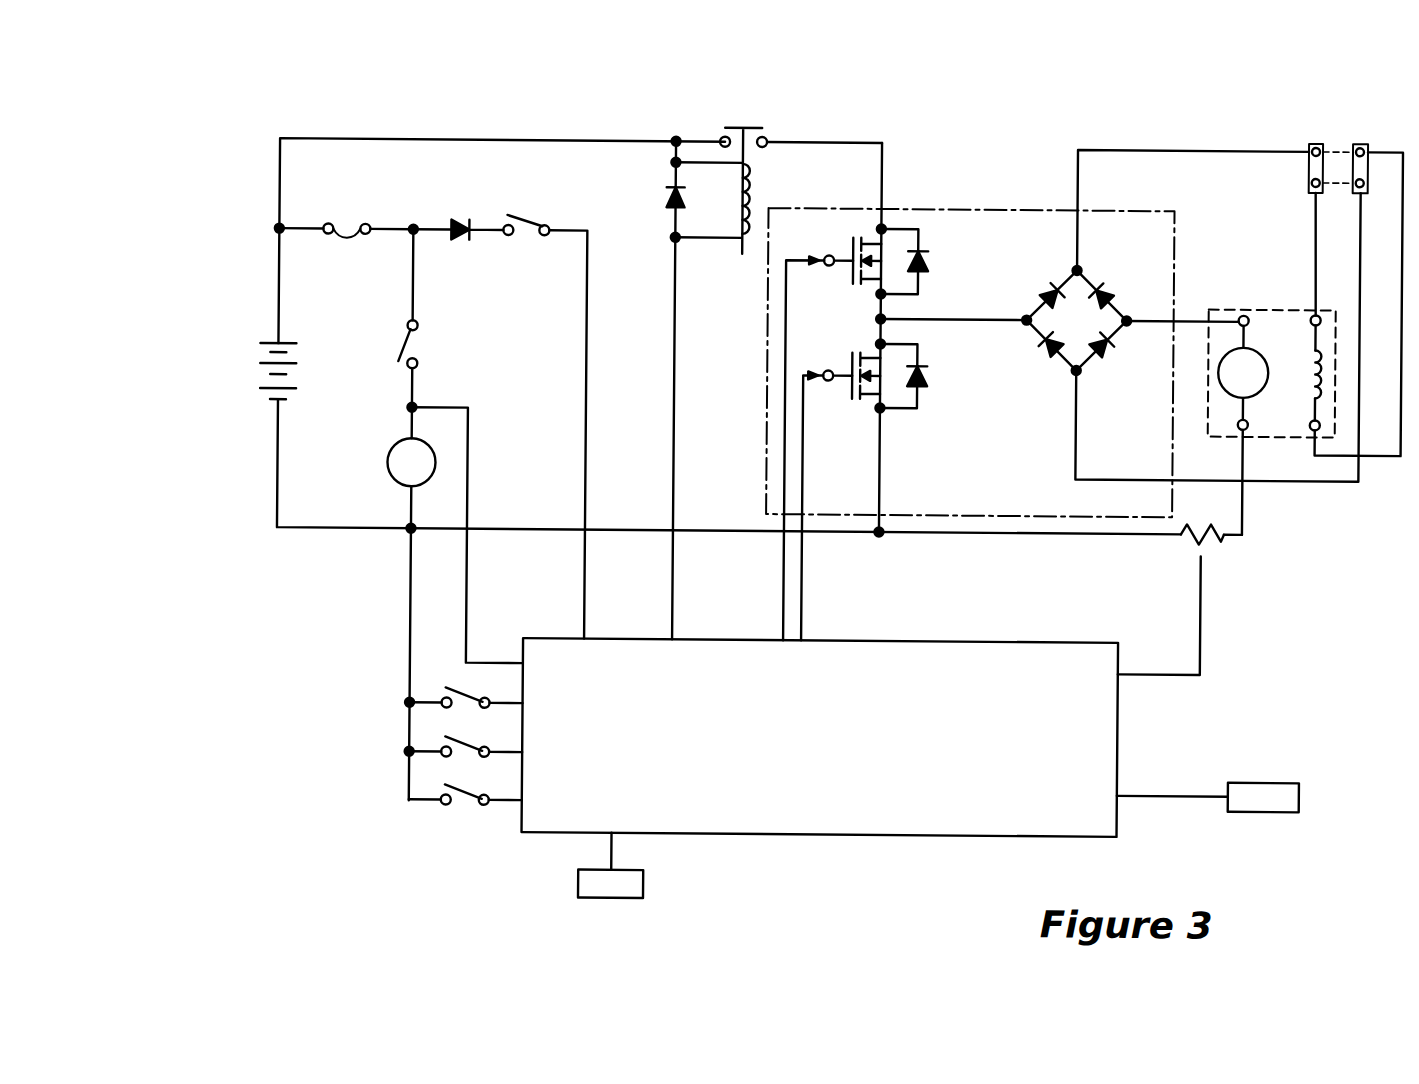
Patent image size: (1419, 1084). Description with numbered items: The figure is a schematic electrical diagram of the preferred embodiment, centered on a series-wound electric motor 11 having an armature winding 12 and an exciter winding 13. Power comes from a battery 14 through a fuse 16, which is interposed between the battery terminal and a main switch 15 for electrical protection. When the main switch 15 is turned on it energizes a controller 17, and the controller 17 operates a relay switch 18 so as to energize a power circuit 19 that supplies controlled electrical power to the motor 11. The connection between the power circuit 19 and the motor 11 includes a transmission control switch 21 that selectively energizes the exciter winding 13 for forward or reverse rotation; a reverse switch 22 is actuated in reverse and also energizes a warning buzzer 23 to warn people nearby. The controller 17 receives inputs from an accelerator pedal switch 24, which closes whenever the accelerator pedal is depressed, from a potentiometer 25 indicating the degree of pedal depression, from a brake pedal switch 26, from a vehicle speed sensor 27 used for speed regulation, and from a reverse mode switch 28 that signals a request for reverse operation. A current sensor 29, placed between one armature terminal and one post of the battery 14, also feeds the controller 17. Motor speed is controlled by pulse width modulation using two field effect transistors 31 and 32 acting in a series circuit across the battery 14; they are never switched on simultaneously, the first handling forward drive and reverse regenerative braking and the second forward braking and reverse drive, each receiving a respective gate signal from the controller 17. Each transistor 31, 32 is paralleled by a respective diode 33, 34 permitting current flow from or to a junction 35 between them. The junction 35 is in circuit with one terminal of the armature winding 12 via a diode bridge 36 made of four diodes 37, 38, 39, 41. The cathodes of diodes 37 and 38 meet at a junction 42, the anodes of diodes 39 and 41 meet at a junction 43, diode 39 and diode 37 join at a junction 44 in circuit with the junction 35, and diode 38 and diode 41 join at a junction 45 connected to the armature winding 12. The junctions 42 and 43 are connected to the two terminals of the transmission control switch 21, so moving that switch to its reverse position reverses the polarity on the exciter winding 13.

The series-wound electric motor 11 is at (1305, 343).
The armature winding 12 is at (1268, 364).
The exciter winding 13 is at (1310, 373).
The battery 14 is at (265, 376).
The main switch 15 is at (529, 222).
The fuse 16 is at (347, 223).
The controller 17 is at (984, 641).
The relay switch 18 is at (741, 123).
The power circuit 19 is at (962, 206).
The transmission control switch 21 is at (1331, 135).
The reverse switch 22 is at (413, 345).
The warning buzzer 23 is at (388, 463).
The accelerator pedal switch 24 is at (479, 694).
The potentiometer 25 is at (647, 886).
The brake pedal switch 26 is at (480, 745).
The vehicle speed sensor 27 is at (1271, 779).
The reverse mode switch 28 is at (480, 795).
The current sensor 29 is at (1208, 541).
The field effect transistor 31 is at (851, 277).
The field effect transistor 32 is at (852, 398).
The diode 33 is at (926, 261).
The diode 34 is at (927, 377).
The junction 35 is at (886, 317).
The diode bridge 36 is at (1170, 315).
The diode 37 is at (1049, 288).
The diode 38 is at (1119, 280).
The diode 39 is at (1042, 345).
The diode 41 is at (1112, 340).
The junction 42 is at (1079, 260).
The junction 43 is at (1080, 368).
The junction 44 is at (1026, 320).
The junction 45 is at (1127, 317).